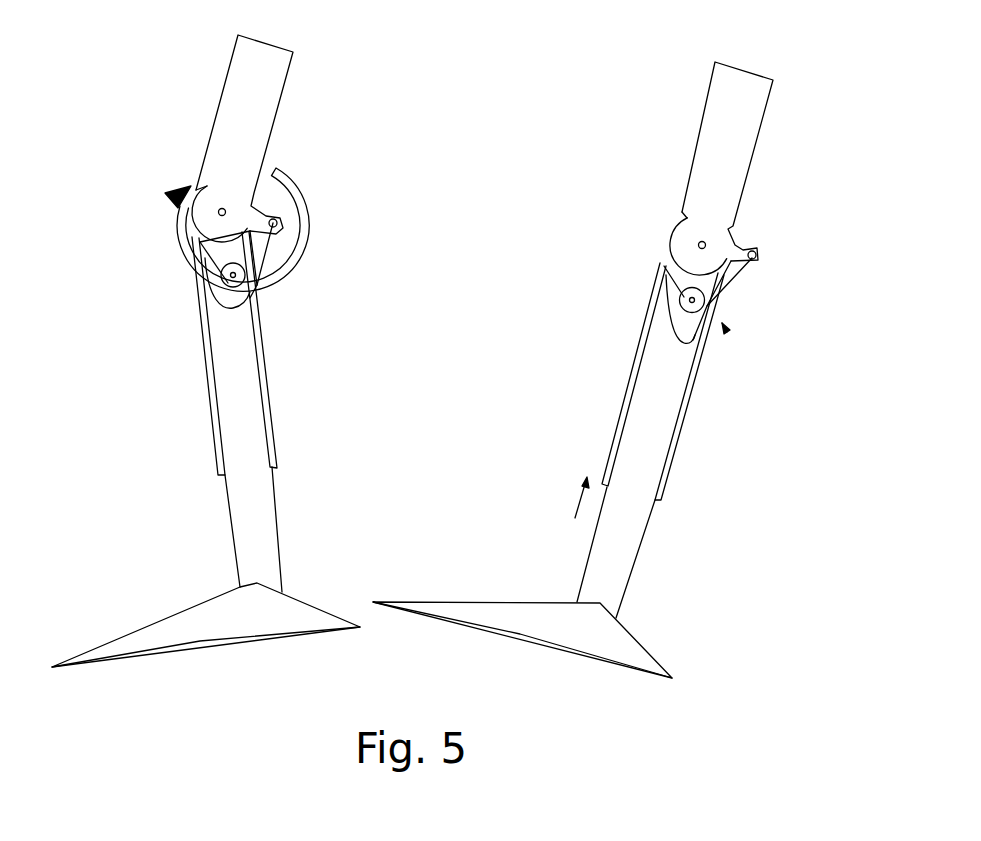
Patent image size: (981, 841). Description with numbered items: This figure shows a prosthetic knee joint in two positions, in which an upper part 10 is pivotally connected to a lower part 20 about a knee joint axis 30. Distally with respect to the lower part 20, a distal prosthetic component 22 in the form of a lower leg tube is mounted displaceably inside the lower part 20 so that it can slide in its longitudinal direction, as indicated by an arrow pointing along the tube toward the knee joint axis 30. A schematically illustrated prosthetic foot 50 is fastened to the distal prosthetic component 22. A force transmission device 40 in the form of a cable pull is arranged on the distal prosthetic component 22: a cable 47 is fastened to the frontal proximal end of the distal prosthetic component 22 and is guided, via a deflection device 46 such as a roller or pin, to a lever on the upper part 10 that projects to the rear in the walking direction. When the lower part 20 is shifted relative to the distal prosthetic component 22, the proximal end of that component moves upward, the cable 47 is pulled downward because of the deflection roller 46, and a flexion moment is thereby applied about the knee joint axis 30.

The upper part 10 is at (287, 82).
The lower part 20 is at (196, 313).
The distal prosthetic component 22 is at (228, 533).
The knee joint axis 30 is at (218, 208).
The force transmission device 40 is at (728, 334).
The deflection device 46 is at (256, 287).
The cable 47 is at (290, 260).
The prosthetic foot 50 is at (157, 622).